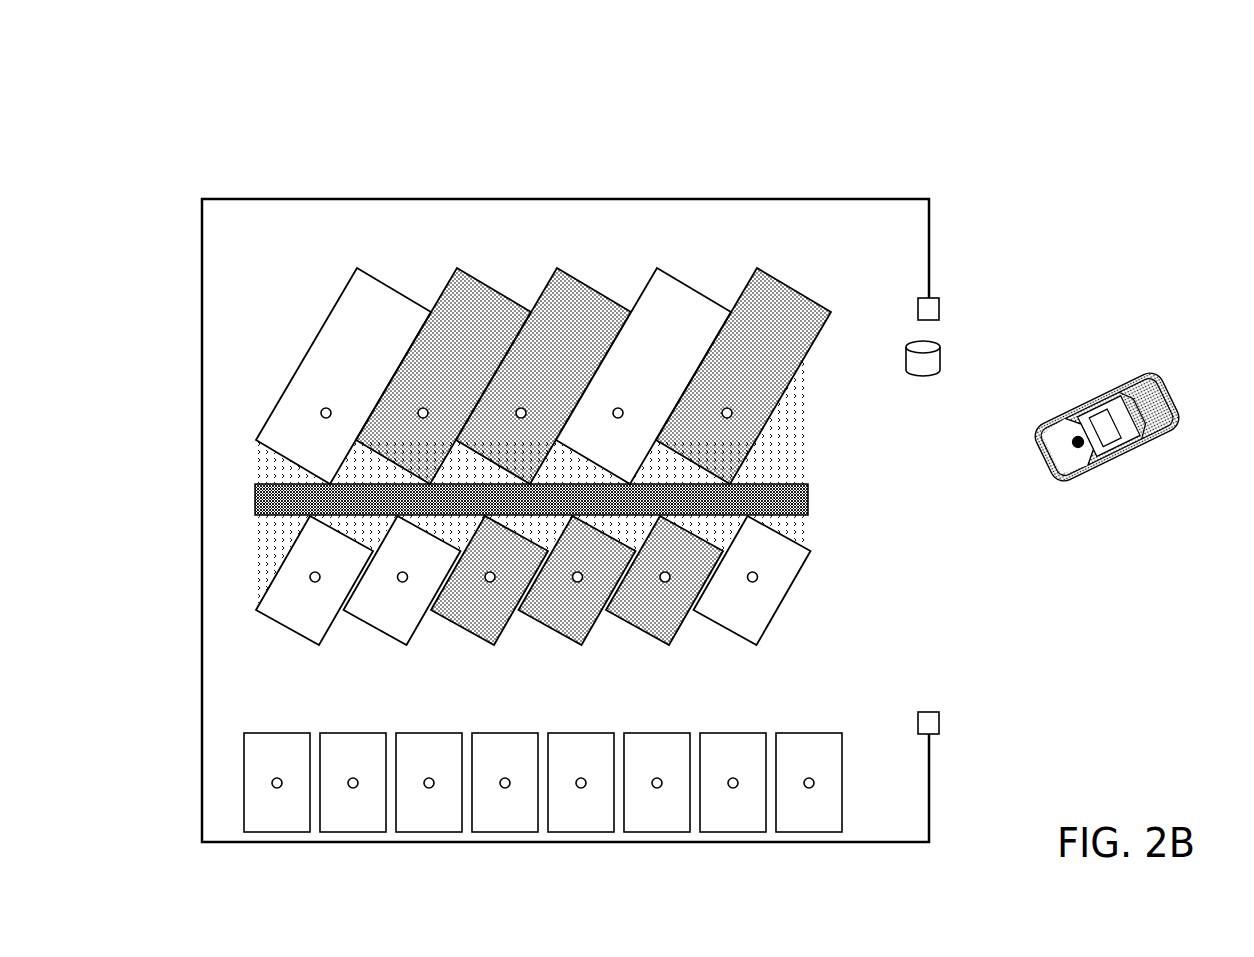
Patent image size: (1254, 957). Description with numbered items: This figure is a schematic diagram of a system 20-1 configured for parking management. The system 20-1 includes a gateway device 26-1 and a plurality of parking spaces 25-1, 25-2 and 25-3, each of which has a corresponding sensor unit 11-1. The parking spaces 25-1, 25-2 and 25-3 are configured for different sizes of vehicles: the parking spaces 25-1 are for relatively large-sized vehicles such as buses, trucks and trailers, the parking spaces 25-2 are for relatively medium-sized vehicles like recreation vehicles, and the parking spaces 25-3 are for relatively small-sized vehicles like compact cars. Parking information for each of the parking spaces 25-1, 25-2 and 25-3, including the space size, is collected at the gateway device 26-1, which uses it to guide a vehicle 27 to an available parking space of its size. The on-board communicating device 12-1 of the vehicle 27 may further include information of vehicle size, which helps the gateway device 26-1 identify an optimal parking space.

The system 20-1 is at (1137, 126).
The parking spaces 25-1 is at (307, 353).
The parking spaces 25-2 is at (790, 592).
The parking spaces 25-3 is at (812, 737).
The sensor unit 11-1 is at (621, 409).
The gateway device 26-1 is at (940, 345).
The vehicle 27 is at (1135, 377).
The on-board communicating device 12-1 is at (1085, 448).